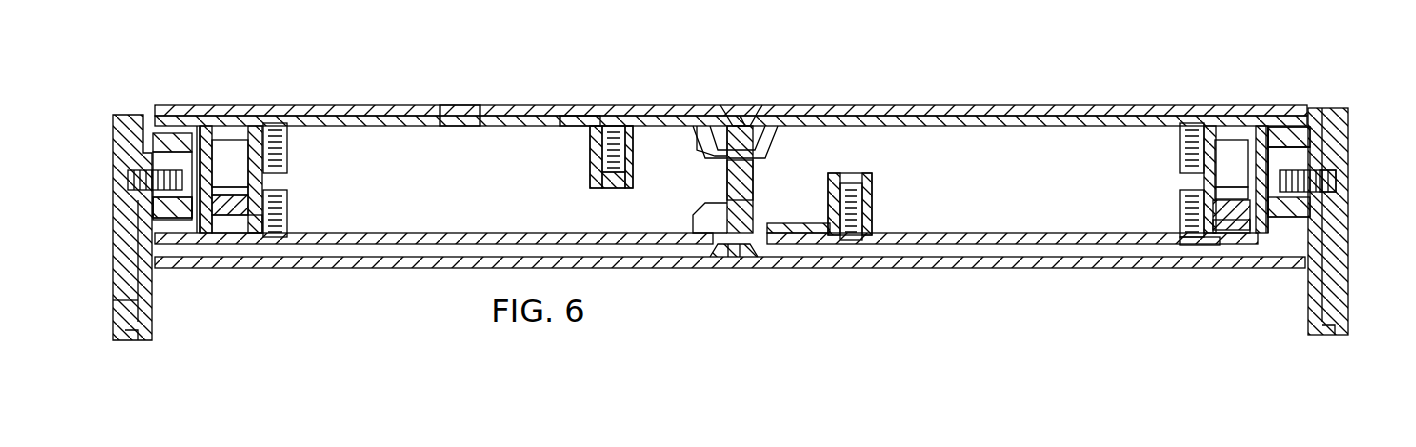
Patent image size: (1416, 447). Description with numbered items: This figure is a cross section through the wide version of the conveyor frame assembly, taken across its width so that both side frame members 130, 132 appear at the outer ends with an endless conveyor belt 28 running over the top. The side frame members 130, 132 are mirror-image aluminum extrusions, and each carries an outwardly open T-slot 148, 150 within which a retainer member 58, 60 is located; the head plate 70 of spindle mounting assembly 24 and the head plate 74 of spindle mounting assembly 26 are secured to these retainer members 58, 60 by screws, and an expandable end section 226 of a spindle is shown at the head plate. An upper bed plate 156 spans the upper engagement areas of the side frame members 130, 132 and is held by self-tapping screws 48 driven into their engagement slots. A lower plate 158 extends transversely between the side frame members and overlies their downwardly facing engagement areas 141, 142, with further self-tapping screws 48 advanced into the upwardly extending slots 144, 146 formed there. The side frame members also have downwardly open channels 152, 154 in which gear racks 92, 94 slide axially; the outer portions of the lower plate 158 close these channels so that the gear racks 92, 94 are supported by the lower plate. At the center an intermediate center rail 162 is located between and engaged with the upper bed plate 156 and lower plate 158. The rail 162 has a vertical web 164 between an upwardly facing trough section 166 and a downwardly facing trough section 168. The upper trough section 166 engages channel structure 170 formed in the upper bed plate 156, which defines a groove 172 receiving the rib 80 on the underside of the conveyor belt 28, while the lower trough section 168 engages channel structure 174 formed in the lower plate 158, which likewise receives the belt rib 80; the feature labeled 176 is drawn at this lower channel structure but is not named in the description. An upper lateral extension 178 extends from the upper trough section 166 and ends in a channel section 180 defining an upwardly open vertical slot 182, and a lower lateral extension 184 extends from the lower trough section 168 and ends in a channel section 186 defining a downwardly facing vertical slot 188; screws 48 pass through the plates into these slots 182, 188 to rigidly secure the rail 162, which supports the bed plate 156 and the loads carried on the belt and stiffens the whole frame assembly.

The spindle mounting assembly 24 is at (1352, 248).
The spindle mounting assembly 26 is at (100, 251).
The endless conveyor belt 28 is at (462, 103).
The self-tapping screws 48 is at (280, 128).
The retainer member 58 is at (123, 308).
The retainer member 60 is at (1338, 182).
The head plate 70 is at (1350, 122).
The head plate 74 is at (112, 132).
The rib 80 is at (735, 112).
The gear rack 92 is at (172, 206).
The gear rack 94 is at (1222, 241).
The side frame member 130 is at (318, 160).
The side frame member 132 is at (1158, 160).
The downwardly facing engagement area 141 is at (248, 228).
The downwardly facing engagement area 142 is at (1193, 248).
The slot 144 is at (292, 195).
The slot 146 is at (1178, 198).
The T-slot 148 is at (172, 135).
The T-slot 150 is at (1296, 125).
The downwardly open channel 152 is at (228, 216).
The downwardly open channel 154 is at (1240, 236).
The upper bed plate 156 is at (479, 103).
The lower plate 158 is at (483, 249).
The intermediate center rail 162 is at (757, 184).
The vertical web 164 is at (756, 186).
The upwardly facing trough section 166 is at (710, 148).
The downwardly facing trough section 168 is at (700, 216).
The channel structure 170 is at (776, 124).
The groove 172 is at (752, 114).
The channel structure 174 is at (715, 262).
The lower clamp tab 176 is at (738, 266).
The upper lateral extension 178 is at (616, 125).
The channel section 180 is at (586, 128).
The vertical slot 182 is at (591, 172).
The lower lateral extension 184 is at (794, 244).
The channel section 186 is at (872, 203).
The vertical slot 188 is at (866, 176).
The expandable end section 226 is at (1268, 78).